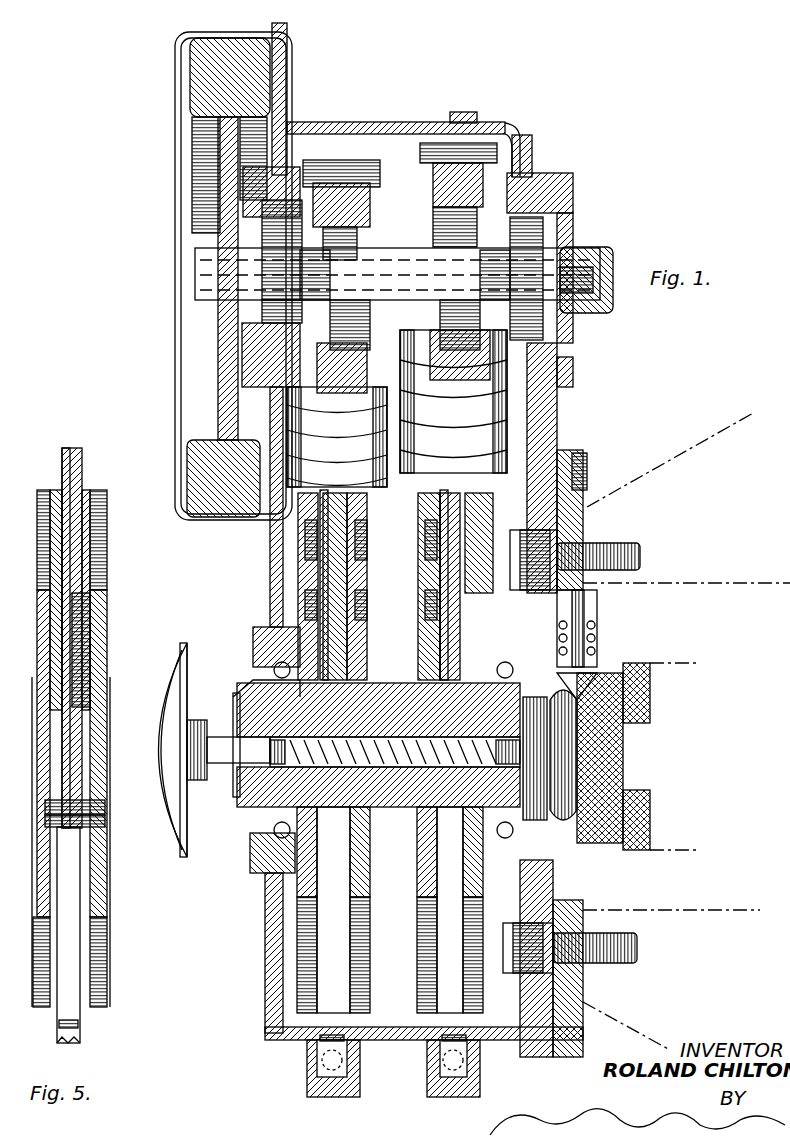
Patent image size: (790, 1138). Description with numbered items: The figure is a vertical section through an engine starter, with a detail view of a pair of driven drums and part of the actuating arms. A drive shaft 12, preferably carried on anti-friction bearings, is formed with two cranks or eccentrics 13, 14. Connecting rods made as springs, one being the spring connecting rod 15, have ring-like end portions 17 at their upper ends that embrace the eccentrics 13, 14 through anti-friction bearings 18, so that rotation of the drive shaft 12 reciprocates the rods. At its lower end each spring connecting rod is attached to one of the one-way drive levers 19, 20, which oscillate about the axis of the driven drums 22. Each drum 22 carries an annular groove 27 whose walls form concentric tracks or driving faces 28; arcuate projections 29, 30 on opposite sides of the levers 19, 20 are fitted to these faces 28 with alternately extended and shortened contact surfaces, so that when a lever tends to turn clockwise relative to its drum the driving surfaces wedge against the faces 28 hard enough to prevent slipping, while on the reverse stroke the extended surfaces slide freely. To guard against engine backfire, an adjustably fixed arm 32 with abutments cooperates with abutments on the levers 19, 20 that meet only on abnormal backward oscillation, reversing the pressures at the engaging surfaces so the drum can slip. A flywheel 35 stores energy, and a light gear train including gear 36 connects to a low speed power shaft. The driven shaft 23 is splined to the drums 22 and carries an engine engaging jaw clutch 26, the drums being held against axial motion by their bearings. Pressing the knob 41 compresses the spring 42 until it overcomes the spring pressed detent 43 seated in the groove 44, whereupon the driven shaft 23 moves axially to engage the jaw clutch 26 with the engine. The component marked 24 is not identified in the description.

In FIG. 1, the drive shaft 12 is at (380, 262).
In FIG. 1, the eccentric 13 is at (470, 270).
In FIG. 1, the eccentric 14 is at (355, 250).
In FIG. 1, the spring connecting rod 15 is at (370, 440).
In FIG. 1, the ring-like end portion 17 is at (355, 200).
In FIG. 1, the anti-friction bearing 18 is at (335, 170).
In FIG. 1, the one-way drive lever 19 is at (560, 470).
In FIG. 5, the one-way drive lever 19 is at (78, 475).
In FIG. 1, the one-way drive lever 20 is at (570, 460).
In FIG. 5, the one-way drive lever 20 is at (70, 450).
In FIG. 1, the driven drum 22 is at (340, 640).
In FIG. 5, the driven drum 22 is at (45, 550).
In FIG. 1, the driven shaft 23 is at (370, 725).
In FIG. 1, the gear 24 is at (650, 845).
In FIG. 1, the jaw clutch 26 is at (640, 700).
In FIG. 1, the annular groove 27 is at (330, 560).
In FIG. 5, the annular groove 27 is at (90, 830).
In FIG. 1, the driving face 28 is at (350, 530).
In FIG. 5, the driving face 28 is at (85, 845).
In FIG. 5, the arcuate projection 29 is at (50, 705).
In FIG. 5, the arcuate projection 30 is at (85, 645).
In FIG. 1, the adjustably fixed arm 32 is at (340, 1022).
In FIG. 5, the adjustably fixed arm 32 is at (82, 1022).
In FIG. 1, the flywheel 35 is at (207, 42).
In FIG. 1, the gear 36 is at (580, 272).
In FIG. 1, the knob 41 is at (180, 695).
In FIG. 1, the spring 42 is at (380, 790).
In FIG. 1, the spring pressed detent 43 is at (580, 640).
In FIG. 1, the groove 44 is at (600, 760).